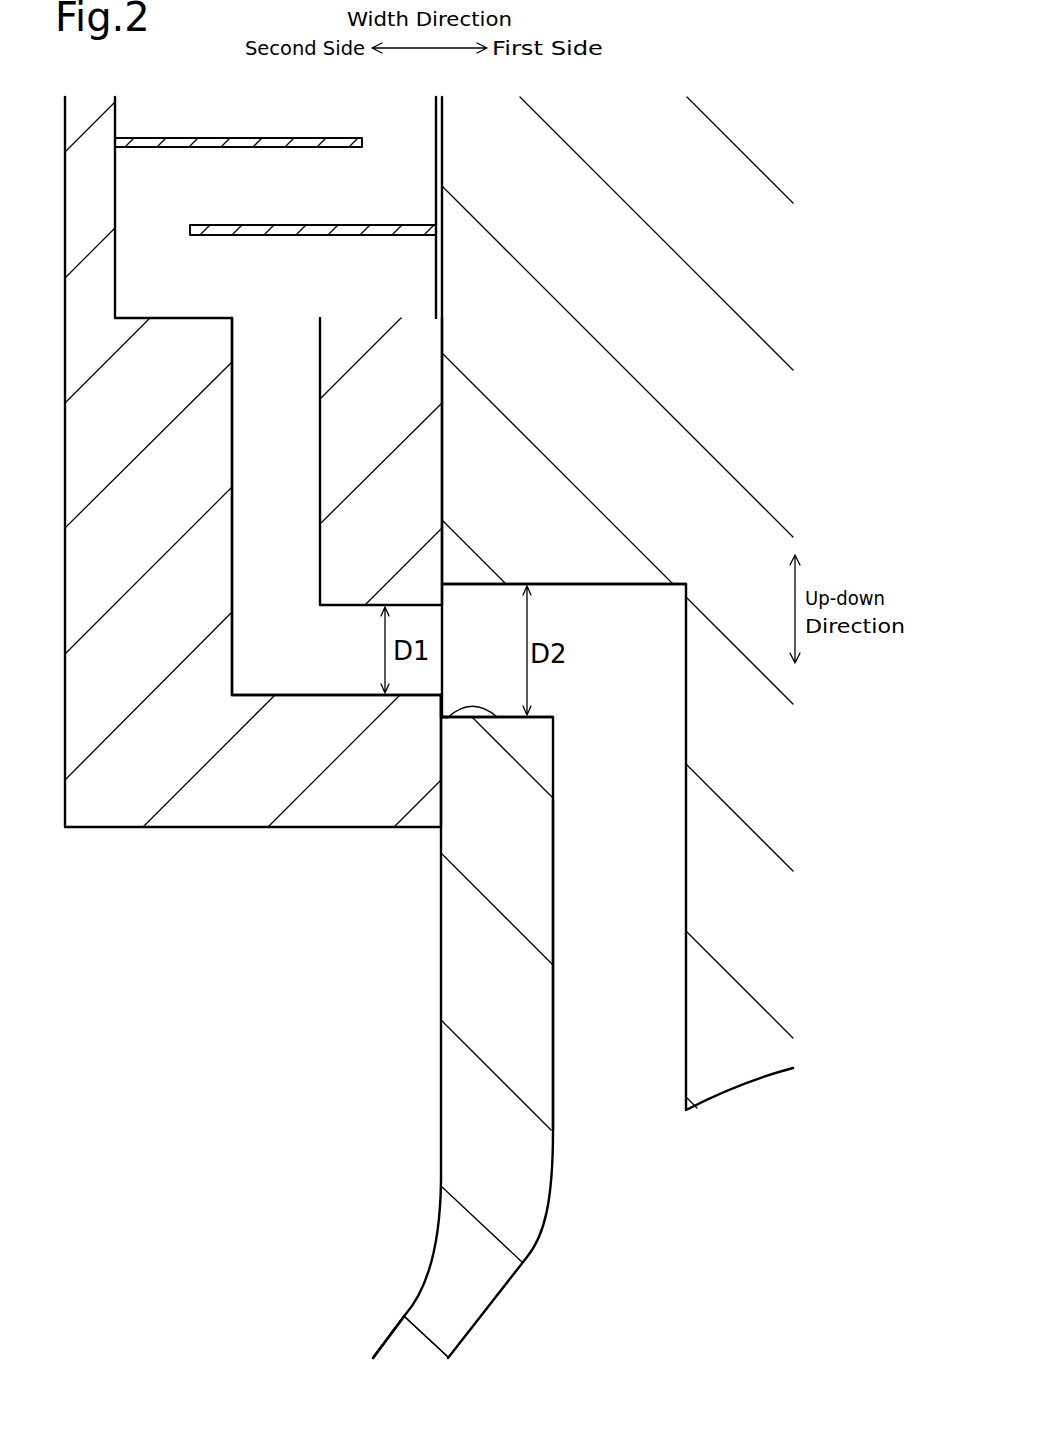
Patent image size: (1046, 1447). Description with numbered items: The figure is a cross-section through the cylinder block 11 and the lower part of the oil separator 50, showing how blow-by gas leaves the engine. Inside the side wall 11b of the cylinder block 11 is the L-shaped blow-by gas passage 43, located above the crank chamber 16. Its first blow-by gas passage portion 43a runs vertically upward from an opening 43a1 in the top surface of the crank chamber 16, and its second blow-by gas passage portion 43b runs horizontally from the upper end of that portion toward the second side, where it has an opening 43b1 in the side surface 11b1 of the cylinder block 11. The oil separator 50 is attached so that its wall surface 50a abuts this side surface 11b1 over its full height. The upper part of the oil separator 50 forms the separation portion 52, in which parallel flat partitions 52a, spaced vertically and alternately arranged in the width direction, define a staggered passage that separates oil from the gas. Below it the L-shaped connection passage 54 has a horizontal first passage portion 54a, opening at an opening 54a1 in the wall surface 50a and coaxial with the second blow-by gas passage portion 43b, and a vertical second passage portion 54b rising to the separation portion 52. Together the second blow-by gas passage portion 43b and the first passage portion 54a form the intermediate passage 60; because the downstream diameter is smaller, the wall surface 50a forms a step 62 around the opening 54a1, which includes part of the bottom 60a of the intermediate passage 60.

The cylinder block 11 is at (380, 1347).
The side wall 11b is at (620, 490).
The side surface 11b1 is at (441, 385).
The crank chamber 16 is at (518, 1352).
The blow-by gas passage 43 is at (428, 886).
The first blow-by gas passage portion 43a is at (553, 810).
The opening 43a1 is at (623, 1130).
The second blow-by gas passage portion 43b is at (441, 722).
The opening 43b1 is at (442, 584).
The oil separator 50 is at (66, 710).
The wall surface 50a is at (443, 333).
The separation portion 52 is at (395, 153).
The partitions 52a is at (262, 136).
The connection passage 54 is at (297, 886).
The first passage portion 54a is at (343, 693).
The opening 54a1 is at (444, 714).
The second passage portion 54b is at (232, 536).
The intermediate passage 60 is at (362, 886).
The bottom 60a is at (546, 714).
The step 62 is at (444, 712).